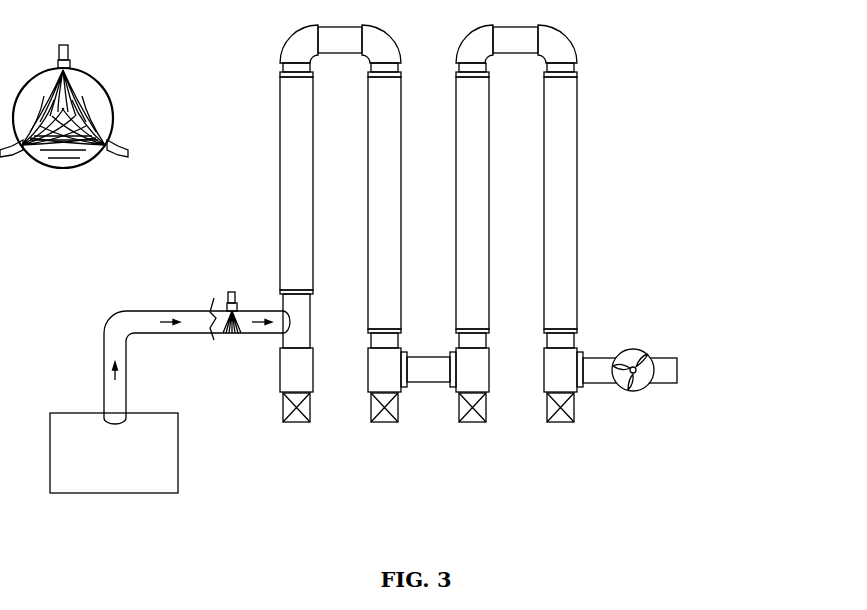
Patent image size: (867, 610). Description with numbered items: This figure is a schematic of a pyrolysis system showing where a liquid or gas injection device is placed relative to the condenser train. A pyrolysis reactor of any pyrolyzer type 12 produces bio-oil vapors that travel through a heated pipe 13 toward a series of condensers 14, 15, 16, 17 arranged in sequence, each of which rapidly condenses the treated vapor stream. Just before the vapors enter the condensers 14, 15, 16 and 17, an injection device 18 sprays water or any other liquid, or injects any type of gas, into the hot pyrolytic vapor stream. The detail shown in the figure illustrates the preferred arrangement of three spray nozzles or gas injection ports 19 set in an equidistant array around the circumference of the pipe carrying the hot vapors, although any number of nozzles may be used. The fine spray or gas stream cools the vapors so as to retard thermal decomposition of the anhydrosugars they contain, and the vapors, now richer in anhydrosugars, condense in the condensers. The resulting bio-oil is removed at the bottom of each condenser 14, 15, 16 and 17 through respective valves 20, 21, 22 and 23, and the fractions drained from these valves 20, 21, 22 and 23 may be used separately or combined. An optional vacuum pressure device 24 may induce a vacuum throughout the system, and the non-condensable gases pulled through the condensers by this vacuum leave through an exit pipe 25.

The pyrolyzer 12 is at (150, 450).
The heated pipe 13 is at (112, 348).
The condenser 14 is at (304, 197).
The condenser 15 is at (392, 197).
The condenser 16 is at (480, 197).
The condenser 17 is at (567, 197).
The injection device 18 is at (232, 287).
The spray nozzles or gas injection ports 19 is at (205, 294).
The valve 20 is at (296, 422).
The valve 21 is at (384, 422).
The valve 22 is at (472, 422).
The valve 23 is at (560, 422).
The vacuum pressure device 24 is at (648, 344).
The exit pipe 25 is at (677, 370).